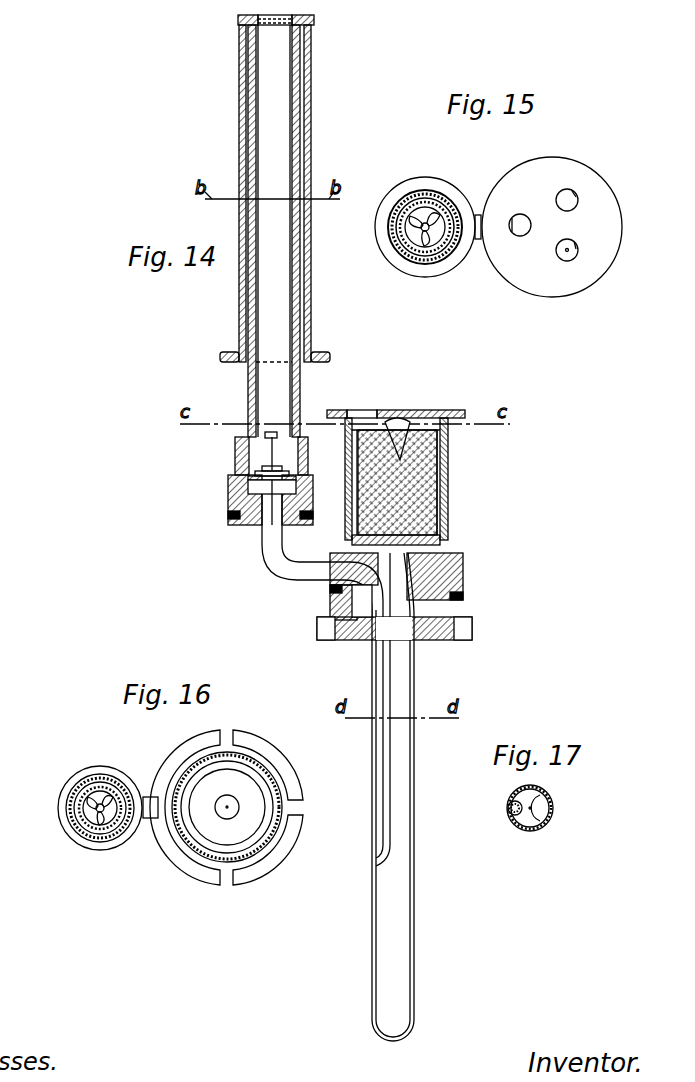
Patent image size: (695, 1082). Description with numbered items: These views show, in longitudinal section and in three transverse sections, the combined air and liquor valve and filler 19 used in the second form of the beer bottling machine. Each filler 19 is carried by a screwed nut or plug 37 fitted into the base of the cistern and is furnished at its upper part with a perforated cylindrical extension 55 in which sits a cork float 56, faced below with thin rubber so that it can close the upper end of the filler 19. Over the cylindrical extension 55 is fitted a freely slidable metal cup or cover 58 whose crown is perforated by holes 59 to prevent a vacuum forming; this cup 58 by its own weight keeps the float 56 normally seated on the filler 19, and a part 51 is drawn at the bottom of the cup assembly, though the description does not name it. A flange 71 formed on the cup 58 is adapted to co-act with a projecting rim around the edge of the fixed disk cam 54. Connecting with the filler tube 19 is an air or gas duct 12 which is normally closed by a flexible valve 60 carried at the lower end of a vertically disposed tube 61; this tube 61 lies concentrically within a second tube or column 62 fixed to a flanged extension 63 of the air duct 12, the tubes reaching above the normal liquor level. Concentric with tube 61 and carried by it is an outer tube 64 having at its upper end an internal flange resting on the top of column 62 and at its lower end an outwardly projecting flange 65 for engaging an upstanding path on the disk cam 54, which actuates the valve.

In FIG. 14, the air duct 12 is at (258, 565).
In FIG. 15, the air duct 12 is at (478, 240).
In FIG. 16, the air duct 12 is at (147, 818).
In FIG. 17, the air duct 12 is at (510, 812).
In FIG. 14, the combined air and liquor valve and filler 19 is at (415, 664).
In FIG. 17, the combined air and liquor valve and filler 19 is at (538, 820).
In FIG. 14, the screwed nut or plug 37 is at (463, 574).
In FIG. 16, the screwed nut or plug 37 is at (245, 740).
In FIG. 14, the bottom plate 51 is at (428, 545).
In FIG. 15, the disk cam 54 is at (530, 210).
In FIG. 14, the perforated cylindrical extension 55 is at (437, 497).
In FIG. 16, the perforated cylindrical extension 55 is at (270, 776).
In FIG. 14, the cork float 56 is at (430, 518).
In FIG. 15, the cork float 56 is at (570, 257).
In FIG. 16, the cork float 56 is at (239, 808).
In FIG. 14, the slidable metal cup or cover 58 is at (448, 462).
In FIG. 16, the slidable metal cup or cover 58 is at (204, 855).
In FIG. 14, the holes 59 is at (386, 410).
In FIG. 15, the holes 59 is at (556, 197).
In FIG. 14, the flexible valve 60 is at (250, 478).
In FIG. 15, the flexible valve 60 is at (412, 240).
In FIG. 16, the flexible valve 60 is at (92, 822).
In FIG. 14, the vertically disposed tube 61 is at (290, 98).
In FIG. 15, the vertically disposed tube 61 is at (402, 238).
In FIG. 16, the vertically disposed tube 61 is at (102, 778).
In FIG. 14, the second tube or column 62 is at (252, 54).
In FIG. 15, the second tube or column 62 is at (420, 200).
In FIG. 16, the second tube or column 62 is at (106, 832).
In FIG. 14, the flanged extension 63 is at (232, 514).
In FIG. 16, the flanged extension 63 is at (114, 768).
In FIG. 14, the outer tube 64 is at (311, 88).
In FIG. 15, the outer tube 64 is at (390, 228).
In FIG. 14, the outwardly projecting flange 65 is at (318, 355).
In FIG. 15, the outwardly projecting flange 65 is at (437, 276).
In FIG. 14, the flange 71 is at (465, 412).
In FIG. 15, the flange 71 is at (598, 175).